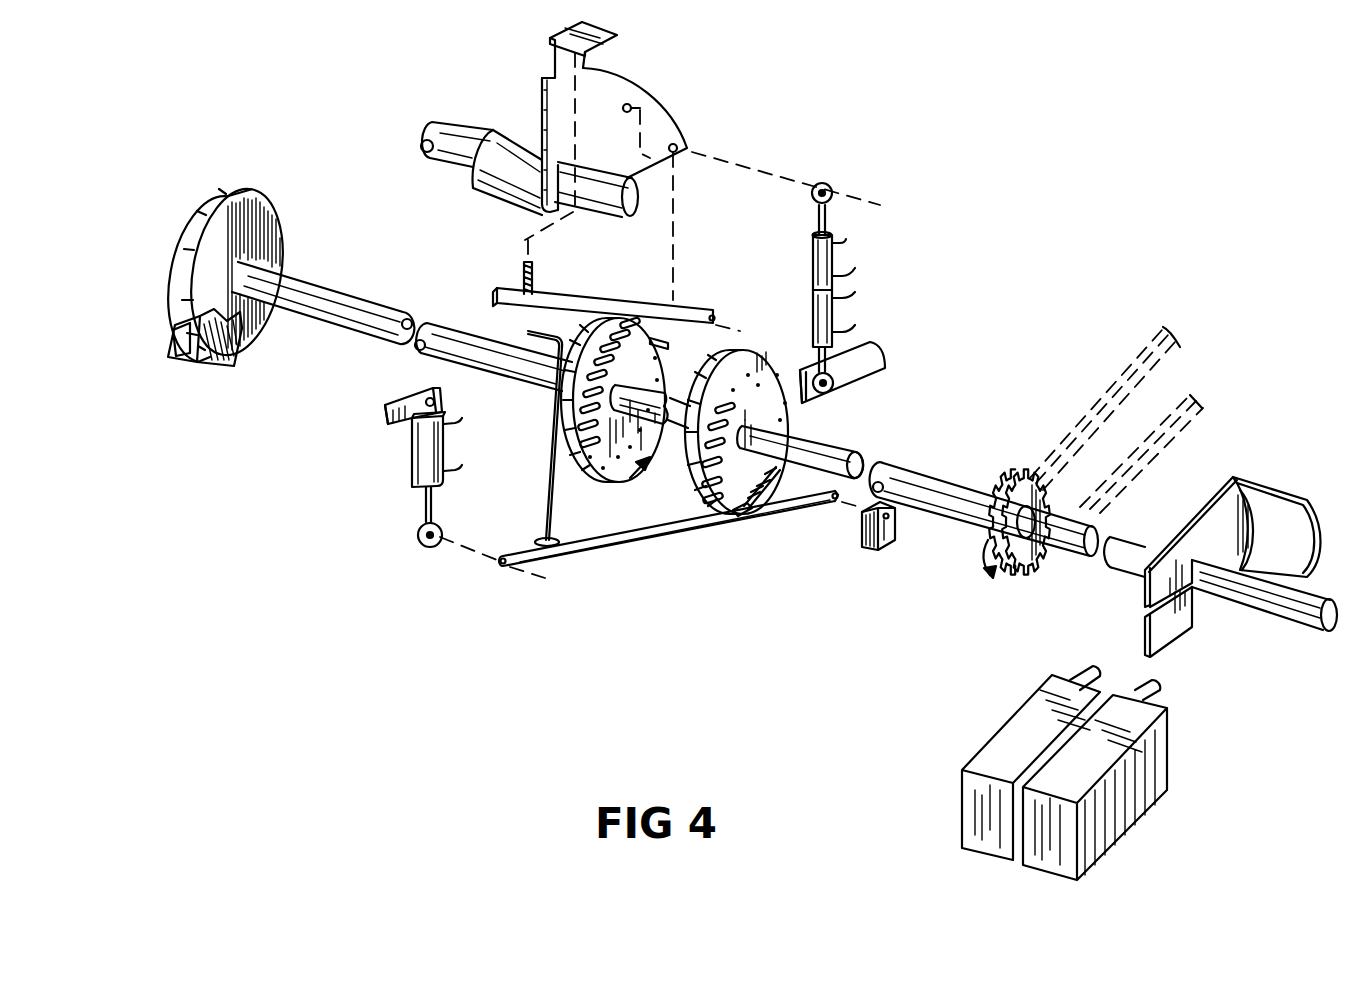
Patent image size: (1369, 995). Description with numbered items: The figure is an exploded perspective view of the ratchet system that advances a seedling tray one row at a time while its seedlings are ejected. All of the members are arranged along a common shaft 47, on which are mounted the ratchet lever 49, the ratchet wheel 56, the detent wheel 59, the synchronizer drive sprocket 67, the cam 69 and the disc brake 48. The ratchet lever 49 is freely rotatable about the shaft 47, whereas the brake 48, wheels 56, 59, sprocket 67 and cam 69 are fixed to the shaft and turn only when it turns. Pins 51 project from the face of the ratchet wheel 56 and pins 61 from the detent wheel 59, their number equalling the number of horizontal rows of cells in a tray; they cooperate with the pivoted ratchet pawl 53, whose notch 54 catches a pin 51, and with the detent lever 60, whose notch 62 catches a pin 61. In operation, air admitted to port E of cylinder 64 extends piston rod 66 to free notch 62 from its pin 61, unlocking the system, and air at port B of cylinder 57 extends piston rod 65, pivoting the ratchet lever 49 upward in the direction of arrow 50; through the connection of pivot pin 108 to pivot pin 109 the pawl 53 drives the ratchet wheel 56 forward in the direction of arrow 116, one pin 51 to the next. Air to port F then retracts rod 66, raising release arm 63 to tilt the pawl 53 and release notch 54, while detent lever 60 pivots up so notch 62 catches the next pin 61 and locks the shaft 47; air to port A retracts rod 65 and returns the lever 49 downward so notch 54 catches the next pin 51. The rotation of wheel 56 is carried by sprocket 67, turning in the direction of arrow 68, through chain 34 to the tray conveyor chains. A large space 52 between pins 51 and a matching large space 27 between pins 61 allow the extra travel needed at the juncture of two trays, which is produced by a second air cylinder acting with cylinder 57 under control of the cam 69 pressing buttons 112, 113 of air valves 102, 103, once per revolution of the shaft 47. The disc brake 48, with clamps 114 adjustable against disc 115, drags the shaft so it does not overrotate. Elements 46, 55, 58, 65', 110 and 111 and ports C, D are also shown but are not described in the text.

The large space 27 is at (740, 512).
The chain 34 is at (1193, 392).
The pivot hole 46 is at (678, 148).
The common shaft 47 is at (345, 300).
The disc brake 48 is at (162, 330).
The ratchet lever 49 is at (548, 96).
The arrow 50 is at (677, 102).
The pins 51 is at (620, 347).
The large space 52 is at (586, 436).
The ratchet pawl 53 is at (592, 305).
The notch 54 is at (650, 318).
The spring 55 is at (522, 282).
The ratchet wheel 56 is at (566, 480).
The air cylinder 57 is at (815, 252).
The mounting bracket 58 is at (398, 405).
The detent wheel 59 is at (690, 452).
The detent lever 60 is at (605, 552).
The pins 61 is at (723, 410).
The notch 62 is at (738, 518).
The release arm 63 is at (547, 484).
The cylinder 64 is at (412, 465).
The piston rod 65 is at (801, 209).
The lower rod eye 65' is at (847, 385).
The piston rod 66 is at (425, 512).
The synchronizer drive sprocket 67 is at (1052, 492).
The arrow 68 is at (985, 572).
The cam 69 is at (1300, 500).
The air valve 102 is at (972, 822).
The air valve 103 is at (1120, 824).
The pivot pin 108 is at (624, 112).
The pivot pin 109 is at (714, 312).
The pin 110 is at (832, 503).
The pin 111 is at (502, 568).
The button 112 is at (1076, 668).
The button 113 is at (1157, 686).
The clamps 114 is at (238, 352).
The disc 115 is at (200, 228).
The arrow 116 is at (624, 482).
The port A is at (848, 241).
The port B is at (855, 263).
The port C is at (855, 289).
The port D is at (856, 323).
The port E is at (463, 418).
The port F is at (462, 465).